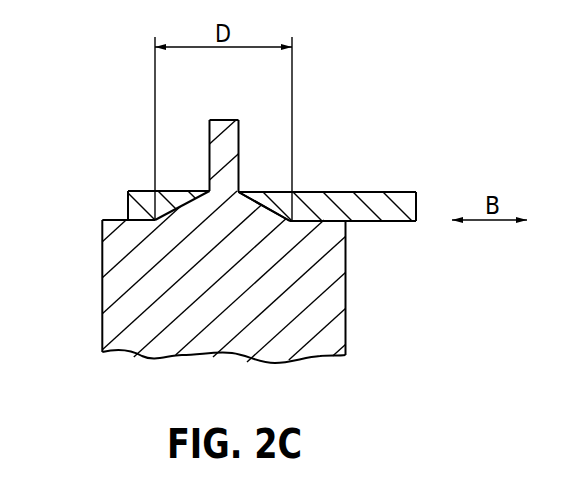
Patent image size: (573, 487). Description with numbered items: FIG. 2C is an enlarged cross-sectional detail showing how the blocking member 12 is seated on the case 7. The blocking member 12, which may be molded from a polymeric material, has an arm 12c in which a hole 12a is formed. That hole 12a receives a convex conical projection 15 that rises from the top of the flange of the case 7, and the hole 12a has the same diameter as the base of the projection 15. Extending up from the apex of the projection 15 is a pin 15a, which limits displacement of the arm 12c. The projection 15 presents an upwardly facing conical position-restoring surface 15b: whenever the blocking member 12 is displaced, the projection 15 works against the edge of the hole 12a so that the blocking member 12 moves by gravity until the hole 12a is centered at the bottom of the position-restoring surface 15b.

The case 7 is at (113, 287).
The blocking member 12 is at (247, 243).
The hole 12a is at (157, 216).
The arm 12c is at (367, 222).
The convex conical projection 15 is at (260, 138).
The pin 15a is at (225, 119).
The position-restoring surface 15b is at (292, 193).